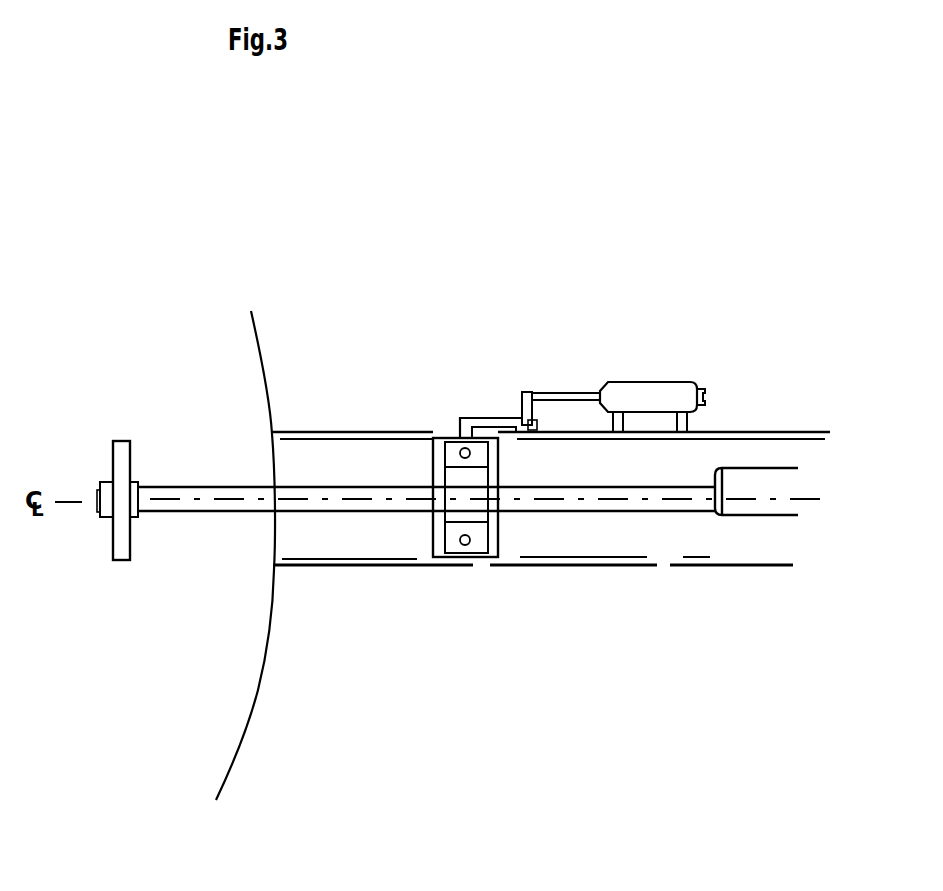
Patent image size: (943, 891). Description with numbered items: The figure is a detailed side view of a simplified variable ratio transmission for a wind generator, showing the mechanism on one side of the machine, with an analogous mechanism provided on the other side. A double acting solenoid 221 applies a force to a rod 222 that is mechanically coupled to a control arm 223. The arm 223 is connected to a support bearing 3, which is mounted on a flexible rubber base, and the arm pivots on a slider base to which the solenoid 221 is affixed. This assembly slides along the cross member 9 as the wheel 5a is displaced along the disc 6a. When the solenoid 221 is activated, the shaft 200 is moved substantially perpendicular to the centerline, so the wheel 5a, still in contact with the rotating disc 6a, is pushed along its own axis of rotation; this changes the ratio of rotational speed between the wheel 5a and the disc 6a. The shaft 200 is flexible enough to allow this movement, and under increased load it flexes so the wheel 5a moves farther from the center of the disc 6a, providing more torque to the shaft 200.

The support bearing 3 is at (483, 558).
The wheel 5a is at (128, 565).
The disc 6a is at (274, 615).
The cross member 9 is at (420, 568).
The shaft 200 is at (658, 512).
The double acting solenoid 221 is at (670, 378).
The rod 222 is at (572, 390).
The arm 223 is at (485, 418).